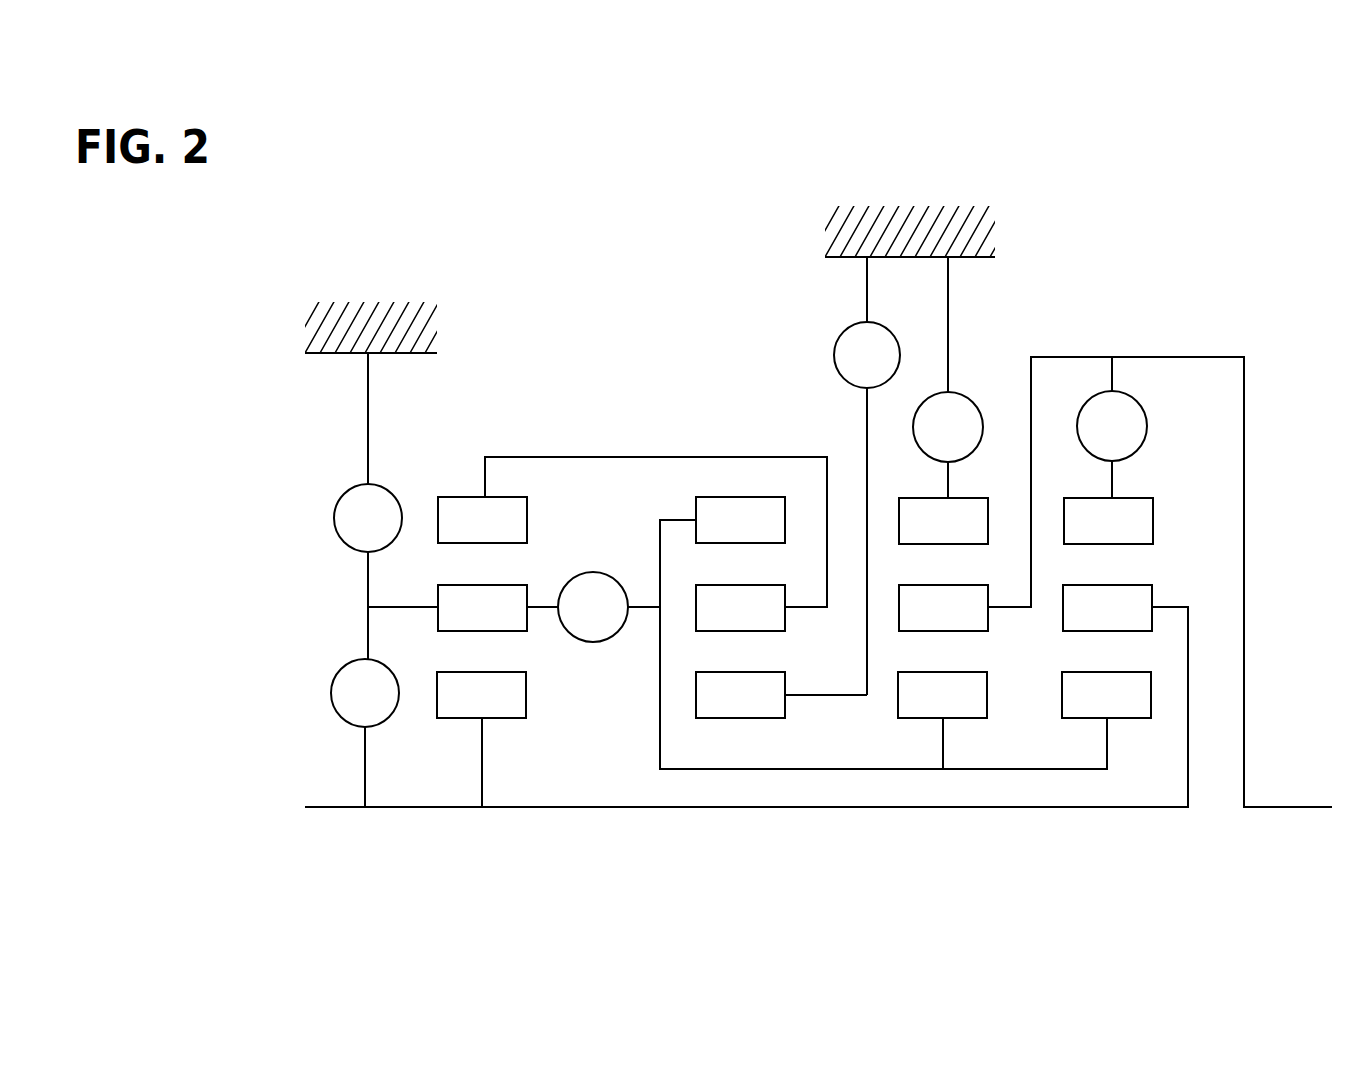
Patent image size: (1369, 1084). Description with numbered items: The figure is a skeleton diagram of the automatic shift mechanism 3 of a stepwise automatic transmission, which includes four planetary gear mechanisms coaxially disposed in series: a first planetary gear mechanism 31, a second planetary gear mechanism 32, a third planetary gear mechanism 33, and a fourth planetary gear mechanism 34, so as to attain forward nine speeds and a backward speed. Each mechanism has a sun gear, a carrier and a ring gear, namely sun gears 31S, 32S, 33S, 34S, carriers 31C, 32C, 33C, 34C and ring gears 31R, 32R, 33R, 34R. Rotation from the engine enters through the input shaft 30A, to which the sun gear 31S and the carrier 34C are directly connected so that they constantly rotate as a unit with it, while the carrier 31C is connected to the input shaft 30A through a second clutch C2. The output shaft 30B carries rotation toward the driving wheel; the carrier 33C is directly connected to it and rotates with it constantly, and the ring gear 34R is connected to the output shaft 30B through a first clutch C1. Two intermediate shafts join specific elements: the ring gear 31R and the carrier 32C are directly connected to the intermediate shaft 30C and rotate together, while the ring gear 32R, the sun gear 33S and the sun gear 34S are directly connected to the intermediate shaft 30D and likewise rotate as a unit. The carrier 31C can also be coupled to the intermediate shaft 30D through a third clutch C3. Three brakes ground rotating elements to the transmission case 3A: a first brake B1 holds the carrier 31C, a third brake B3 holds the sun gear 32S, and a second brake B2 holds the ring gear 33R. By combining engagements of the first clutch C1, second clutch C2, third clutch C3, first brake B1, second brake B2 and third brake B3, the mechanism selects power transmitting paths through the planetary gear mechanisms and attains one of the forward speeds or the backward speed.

The automatic shift mechanism 3 is at (627, 275).
The transmission case 3A is at (413, 354).
The input shaft 30A is at (337, 809).
The output shaft 30B is at (1285, 809).
The intermediate shaft 30C is at (655, 456).
The intermediate shaft 30D is at (838, 768).
The first planetary gear mechanism 31 is at (447, 684).
The second planetary gear mechanism 32 is at (729, 685).
The third planetary gear mechanism 33 is at (932, 686).
The fourth planetary gear mechanism 34 is at (1113, 686).
The ring gear 31R is at (482, 520).
The carrier 31C is at (447, 608).
The sun gear 31S is at (481, 739).
The ring gear 32R is at (740, 520).
The carrier 32C is at (740, 608).
The sun gear 32S is at (740, 695).
The ring gear 33R is at (943, 521).
The carrier 33C is at (943, 608).
The sun gear 33S is at (942, 695).
The ring gear 34R is at (1108, 521).
The carrier 34C is at (1107, 608).
The sun gear 34S is at (1106, 695).
The first brake B1 is at (368, 506).
The second brake B2 is at (948, 377).
The third brake B3 is at (842, 476).
The first clutch C1 is at (1112, 427).
The second clutch C2 is at (365, 733).
The third clutch C3 is at (577, 607).